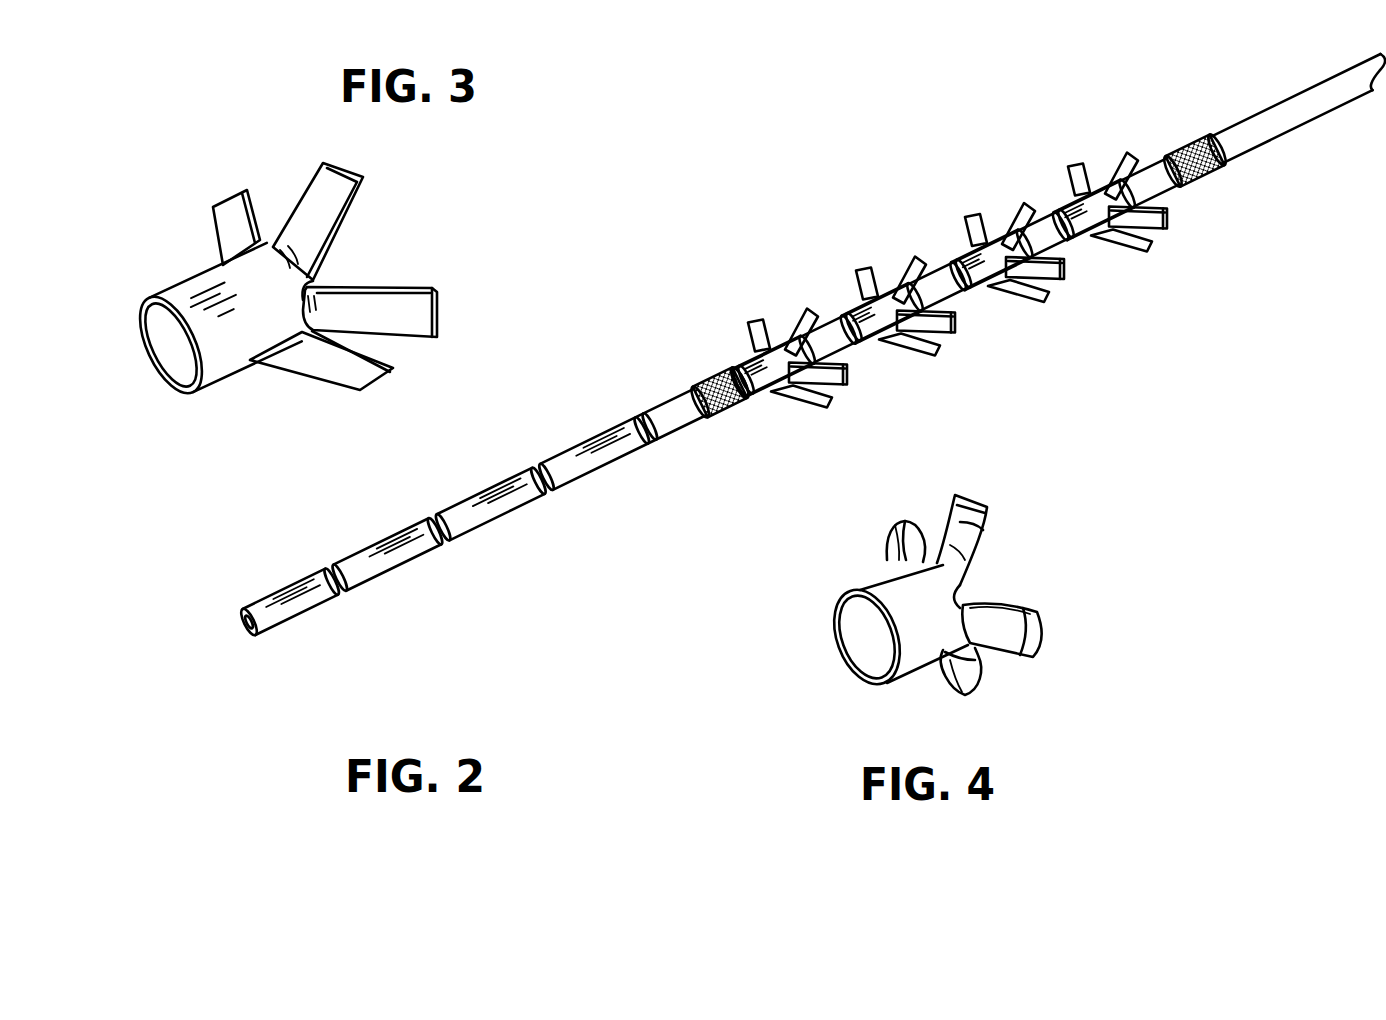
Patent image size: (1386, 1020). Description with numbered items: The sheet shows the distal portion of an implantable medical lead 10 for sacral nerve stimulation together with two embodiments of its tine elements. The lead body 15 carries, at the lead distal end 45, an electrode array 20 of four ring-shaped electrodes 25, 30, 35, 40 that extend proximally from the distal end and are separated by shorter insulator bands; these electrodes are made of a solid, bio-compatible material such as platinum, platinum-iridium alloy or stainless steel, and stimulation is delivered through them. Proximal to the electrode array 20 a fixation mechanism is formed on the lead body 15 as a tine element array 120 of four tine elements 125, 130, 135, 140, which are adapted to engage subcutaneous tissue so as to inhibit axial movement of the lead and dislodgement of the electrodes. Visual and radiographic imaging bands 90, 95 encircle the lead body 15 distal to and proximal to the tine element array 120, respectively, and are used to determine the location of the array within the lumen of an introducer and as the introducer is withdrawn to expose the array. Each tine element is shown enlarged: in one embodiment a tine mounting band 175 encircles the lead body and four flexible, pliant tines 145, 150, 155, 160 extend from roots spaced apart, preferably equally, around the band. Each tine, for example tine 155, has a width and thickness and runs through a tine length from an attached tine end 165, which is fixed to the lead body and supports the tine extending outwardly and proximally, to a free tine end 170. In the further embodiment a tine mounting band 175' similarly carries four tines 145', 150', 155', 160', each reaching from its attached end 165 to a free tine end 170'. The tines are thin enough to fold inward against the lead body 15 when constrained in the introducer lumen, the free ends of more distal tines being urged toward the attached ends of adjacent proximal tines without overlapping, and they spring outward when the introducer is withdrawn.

In FIG. 2, the implantable medical lead 10 is at (832, 152).
In FIG. 2, the lead body 15 is at (1282, 128).
In FIG. 2, the electrode array 20 is at (240, 590).
In FIG. 2, the ring-shaped electrode 25 is at (287, 618).
In FIG. 2, the ring-shaped electrode 30 is at (400, 560).
In FIG. 2, the ring-shaped electrode 35 is at (493, 512).
In FIG. 2, the ring-shaped electrode 40 is at (597, 465).
In FIG. 2, the lead distal end 45 is at (237, 612).
In FIG. 2, the visual and radiographic imaging band 90 is at (708, 382).
In FIG. 2, the visual and radiographic imaging band 95 is at (1180, 148).
In FIG. 2, the tine element array 120 is at (735, 320).
In FIG. 3, the tine element 125 is at (305, 276).
In FIG. 2, the tine element 125 is at (777, 405).
In FIG. 4, the tine element 125 is at (1047, 616).
In FIG. 3, the tine element 130 is at (305, 276).
In FIG. 2, the tine element 130 is at (890, 330).
In FIG. 4, the tine element 130 is at (1047, 616).
In FIG. 3, the tine element 135 is at (305, 276).
In FIG. 2, the tine element 135 is at (995, 284).
In FIG. 4, the tine element 135 is at (1047, 616).
In FIG. 3, the tine element 140 is at (330, 140).
In FIG. 2, the tine element 140 is at (1100, 245).
In FIG. 4, the tine element 140 is at (1313, 738).
In FIG. 3, the tine 145 is at (193, 227).
In FIG. 3, the tine 150 is at (359, 221).
In FIG. 3, the tine 155 is at (447, 245).
In FIG. 3, the tine 160 is at (321, 383).
In FIG. 3, the attached tine end 165 is at (310, 283).
In FIG. 4, the attached tine end 165 is at (960, 610).
In FIG. 3, the free tine end 170 is at (411, 312).
In FIG. 3, the tine mounting band 175 is at (219, 343).
In FIG. 4, the tine 145' is at (853, 544).
In FIG. 4, the tine 150' is at (1009, 540).
In FIG. 4, the tine 155' is at (1050, 586).
In FIG. 4, the tine 160' is at (1003, 678).
In FIG. 4, the free tine end 170' is at (1049, 631).
In FIG. 4, the tine mounting band 175' is at (892, 647).